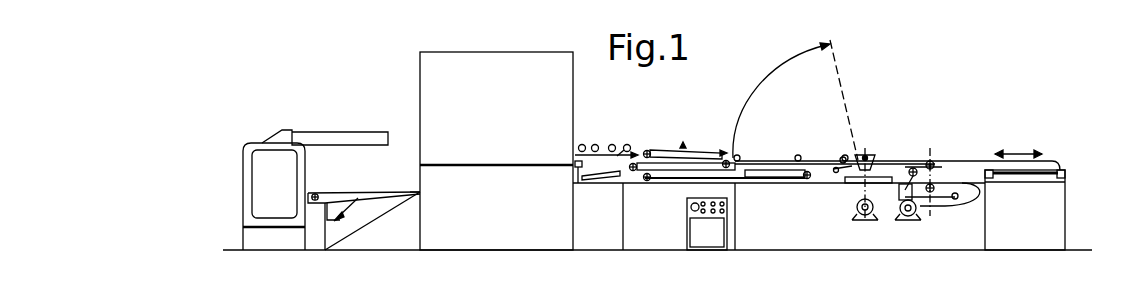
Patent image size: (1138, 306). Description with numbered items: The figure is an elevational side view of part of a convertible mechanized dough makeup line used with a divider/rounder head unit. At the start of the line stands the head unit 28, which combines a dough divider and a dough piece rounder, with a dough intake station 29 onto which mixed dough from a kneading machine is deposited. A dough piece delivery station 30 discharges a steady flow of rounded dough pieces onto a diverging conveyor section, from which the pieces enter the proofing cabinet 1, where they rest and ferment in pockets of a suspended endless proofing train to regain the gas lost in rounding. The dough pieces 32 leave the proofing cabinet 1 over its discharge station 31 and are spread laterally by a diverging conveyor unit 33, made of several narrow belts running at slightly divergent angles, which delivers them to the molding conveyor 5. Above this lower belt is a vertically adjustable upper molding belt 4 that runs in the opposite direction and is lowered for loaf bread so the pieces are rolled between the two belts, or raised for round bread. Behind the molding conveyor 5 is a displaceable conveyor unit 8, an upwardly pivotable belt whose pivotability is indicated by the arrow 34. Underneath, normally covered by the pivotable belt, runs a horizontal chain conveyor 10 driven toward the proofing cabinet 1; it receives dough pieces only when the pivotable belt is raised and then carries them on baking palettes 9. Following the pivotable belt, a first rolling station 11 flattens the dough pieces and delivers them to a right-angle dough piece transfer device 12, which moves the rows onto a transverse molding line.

The proofing cabinet 1 is at (472, 52).
The upper molding belt 4 is at (693, 151).
The molding conveyor 5 is at (665, 163).
The displaceable conveyor unit 8 is at (762, 161).
The baking palettes 9 is at (783, 172).
The chain conveyor 10 is at (752, 184).
The first rolling station 11 is at (871, 154).
The right-angle dough piece transfer device 12 is at (918, 162).
The head unit 28 is at (243, 150).
The dough intake station 29 is at (353, 131).
The dough piece delivery station 30 is at (317, 193).
The discharge station 31 is at (579, 151).
The dough pieces 32 is at (612, 144).
The diverging conveyor unit 33 is at (626, 150).
The arrow 34 is at (738, 136).